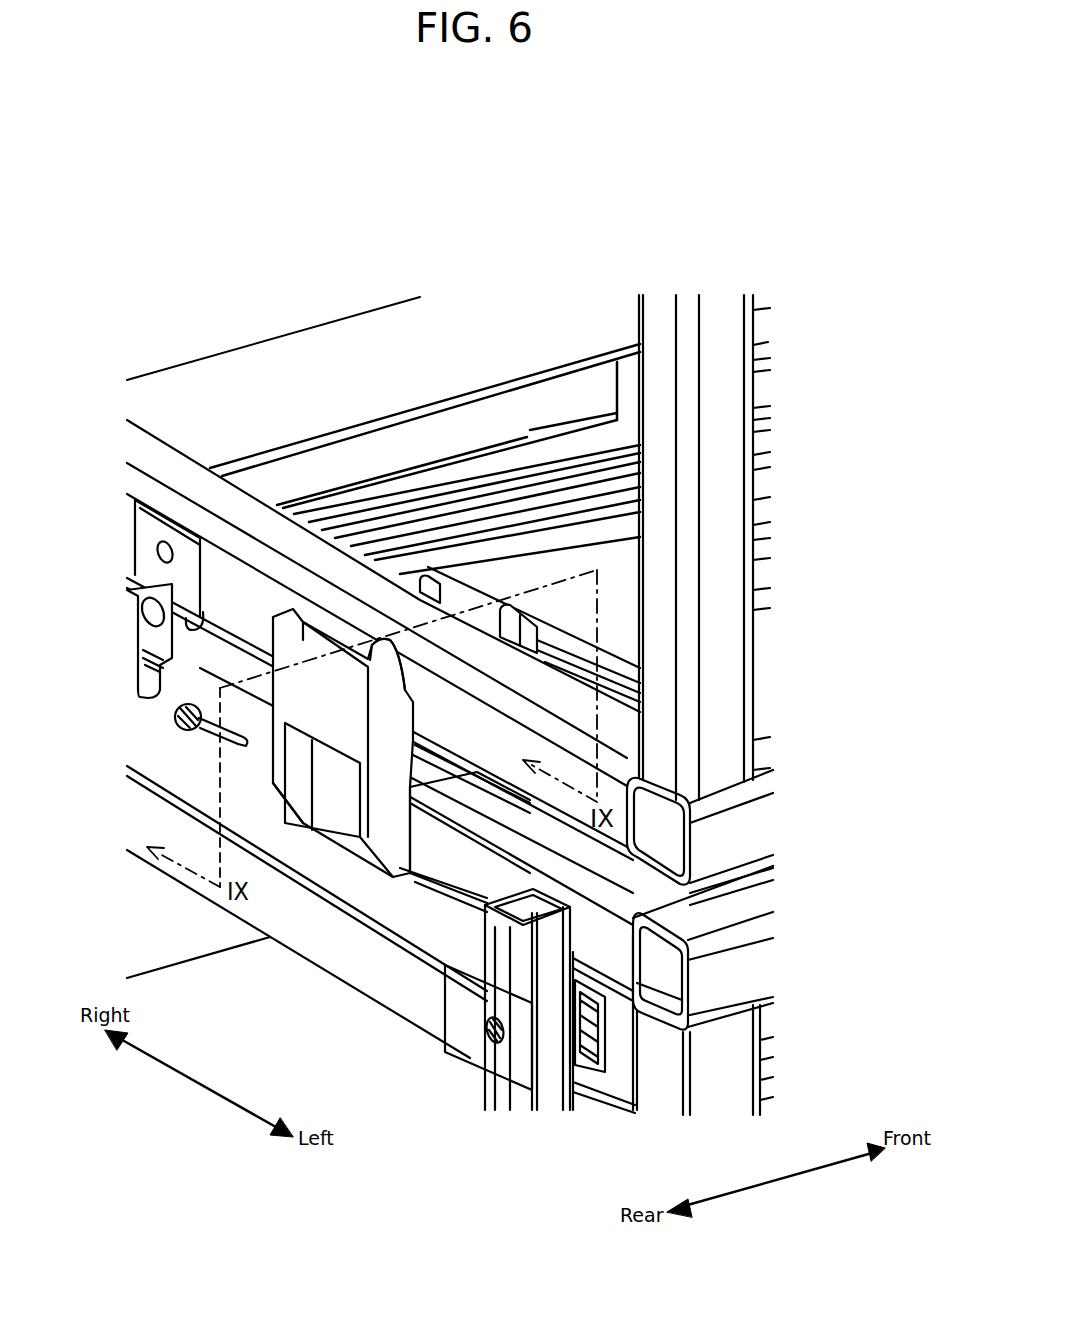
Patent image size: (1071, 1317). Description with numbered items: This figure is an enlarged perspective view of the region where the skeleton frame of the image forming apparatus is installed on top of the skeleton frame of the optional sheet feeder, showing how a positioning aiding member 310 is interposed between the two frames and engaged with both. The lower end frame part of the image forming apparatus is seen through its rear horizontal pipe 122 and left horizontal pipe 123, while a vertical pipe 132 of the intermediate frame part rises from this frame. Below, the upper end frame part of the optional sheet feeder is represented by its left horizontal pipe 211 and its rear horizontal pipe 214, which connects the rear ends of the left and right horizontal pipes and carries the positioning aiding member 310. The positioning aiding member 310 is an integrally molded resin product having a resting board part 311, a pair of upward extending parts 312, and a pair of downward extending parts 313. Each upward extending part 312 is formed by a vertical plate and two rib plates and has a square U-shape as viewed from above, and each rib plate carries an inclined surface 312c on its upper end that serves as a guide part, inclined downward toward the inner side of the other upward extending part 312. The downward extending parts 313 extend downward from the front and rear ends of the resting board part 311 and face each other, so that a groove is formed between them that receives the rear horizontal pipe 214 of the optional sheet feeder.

The rear horizontal pipe 122 is at (365, 585).
The vertical pipe 132 is at (730, 453).
The left horizontal pipe 123 is at (750, 830).
The upward extending part 312 is at (477, 580).
The inclined surface 312c is at (415, 578).
The downward extending part 313 is at (333, 805).
The resting board part 311 is at (443, 760).
The positioning aiding member 310 is at (268, 937).
The left horizontal pipe 211 is at (737, 980).
The rear horizontal pipe 214 is at (595, 938).